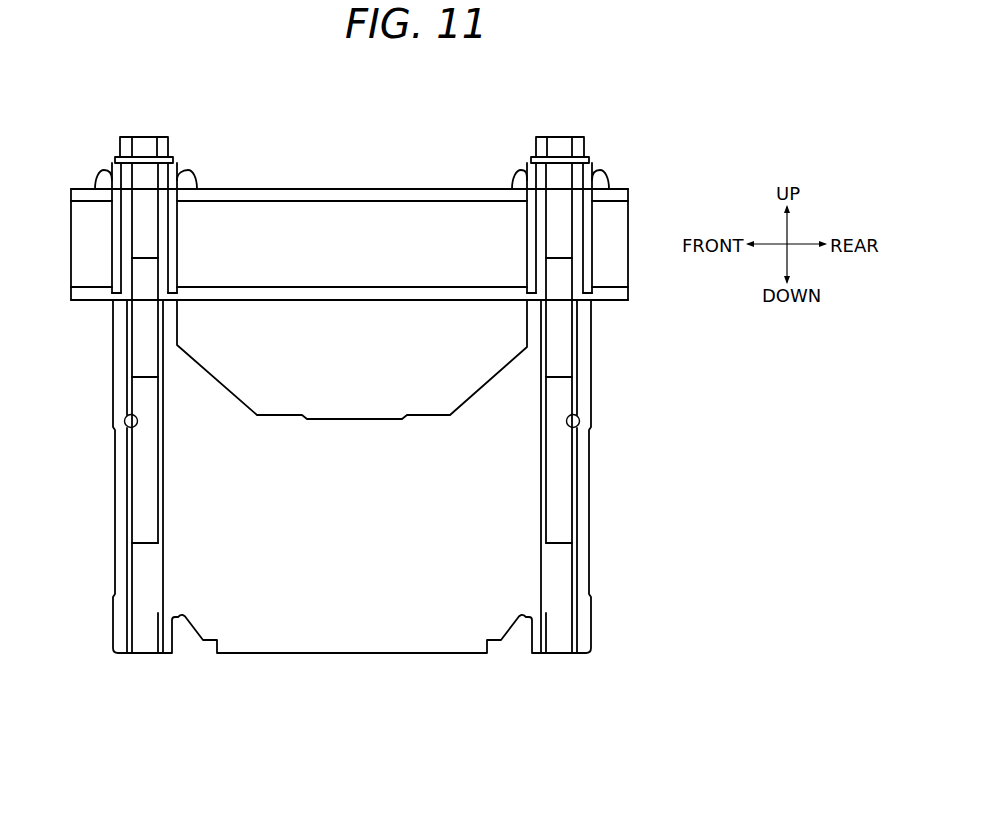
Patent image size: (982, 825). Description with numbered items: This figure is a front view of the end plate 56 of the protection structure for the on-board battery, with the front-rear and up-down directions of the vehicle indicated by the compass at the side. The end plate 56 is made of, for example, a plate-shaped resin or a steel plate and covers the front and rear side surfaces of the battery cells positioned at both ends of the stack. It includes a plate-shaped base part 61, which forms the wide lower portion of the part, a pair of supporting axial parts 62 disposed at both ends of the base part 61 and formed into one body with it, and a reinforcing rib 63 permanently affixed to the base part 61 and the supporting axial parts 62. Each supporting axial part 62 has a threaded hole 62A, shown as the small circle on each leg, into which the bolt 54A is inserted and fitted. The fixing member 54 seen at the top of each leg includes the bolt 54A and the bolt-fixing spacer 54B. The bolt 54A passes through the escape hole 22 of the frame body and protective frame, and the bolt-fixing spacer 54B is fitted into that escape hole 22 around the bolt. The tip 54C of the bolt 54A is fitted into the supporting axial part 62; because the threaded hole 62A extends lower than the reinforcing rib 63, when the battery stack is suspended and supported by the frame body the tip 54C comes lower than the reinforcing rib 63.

The escape hole 22 is at (122, 228).
The fixing member 54 is at (399, 364).
The bolt 54A is at (150, 307).
The bolt-fixing spacer 54B is at (168, 227).
The tip 54C is at (138, 543).
The end plate 56 is at (347, 124).
The base part 61 is at (347, 637).
The supporting axial part 62 is at (120, 360).
The threaded hole 62A is at (125, 428).
The reinforcing rib 63 is at (213, 400).